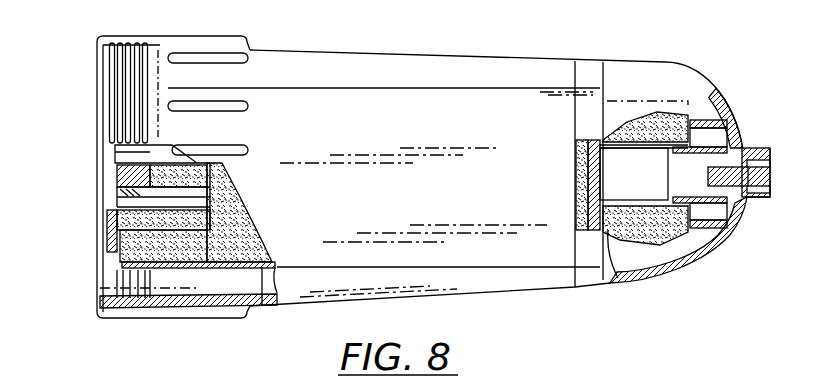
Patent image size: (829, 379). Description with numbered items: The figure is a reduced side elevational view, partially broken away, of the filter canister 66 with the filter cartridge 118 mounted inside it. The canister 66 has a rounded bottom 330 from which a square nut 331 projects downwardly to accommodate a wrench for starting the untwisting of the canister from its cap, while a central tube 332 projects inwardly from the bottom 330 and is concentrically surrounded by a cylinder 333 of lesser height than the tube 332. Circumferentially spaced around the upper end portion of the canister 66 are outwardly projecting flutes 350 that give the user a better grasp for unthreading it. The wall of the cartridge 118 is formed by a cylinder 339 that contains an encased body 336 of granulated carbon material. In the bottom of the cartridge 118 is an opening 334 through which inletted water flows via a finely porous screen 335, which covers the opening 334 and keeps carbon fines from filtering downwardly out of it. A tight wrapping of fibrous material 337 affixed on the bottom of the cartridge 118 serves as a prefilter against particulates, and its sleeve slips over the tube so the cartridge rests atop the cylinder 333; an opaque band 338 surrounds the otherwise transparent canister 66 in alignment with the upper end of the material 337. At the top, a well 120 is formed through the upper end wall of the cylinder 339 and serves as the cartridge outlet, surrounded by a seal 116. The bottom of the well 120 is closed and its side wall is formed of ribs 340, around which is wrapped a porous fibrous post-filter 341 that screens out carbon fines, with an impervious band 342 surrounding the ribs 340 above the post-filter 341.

The canister 66 is at (443, 57).
The flutes 350 is at (234, 53).
The ribs 340 is at (118, 147).
The impervious band 342 is at (120, 180).
The well 120 is at (118, 202).
The seal 116 is at (110, 228).
The post-filter 341 is at (115, 247).
The encased body of granulated carbon material 336 is at (230, 265).
The cylinder 339 is at (188, 268).
The filter cartridge 118 is at (265, 300).
The opaque band 338 is at (587, 68).
The opening 334 is at (607, 135).
The finely porous screen 335 is at (607, 157).
The cylinder 333 is at (705, 100).
The rounded bottom 330 is at (747, 121).
The square nut 331 is at (755, 198).
The central tube 332 is at (728, 238).
The fibrous material 337 is at (672, 240).